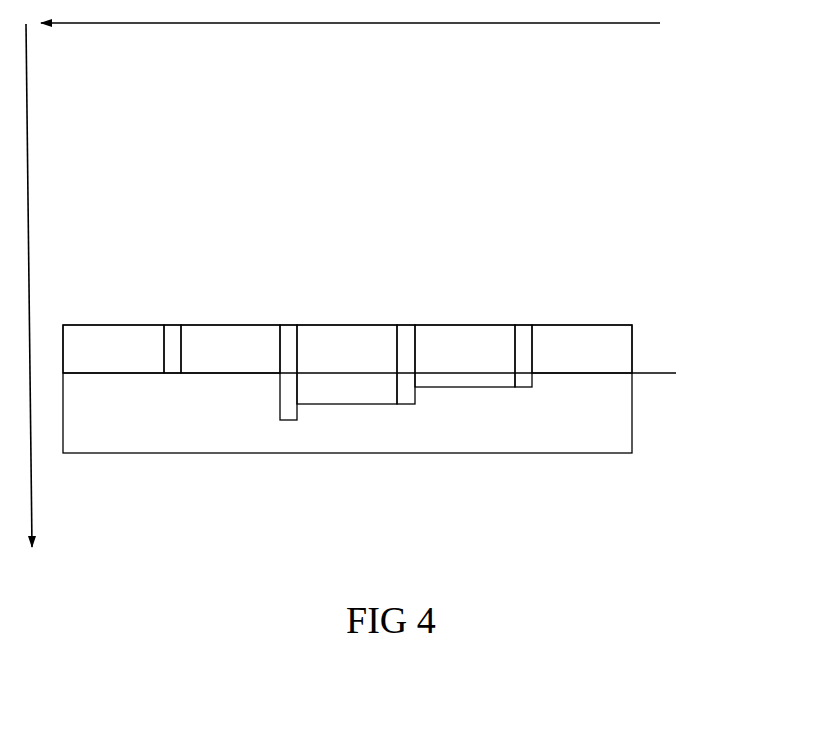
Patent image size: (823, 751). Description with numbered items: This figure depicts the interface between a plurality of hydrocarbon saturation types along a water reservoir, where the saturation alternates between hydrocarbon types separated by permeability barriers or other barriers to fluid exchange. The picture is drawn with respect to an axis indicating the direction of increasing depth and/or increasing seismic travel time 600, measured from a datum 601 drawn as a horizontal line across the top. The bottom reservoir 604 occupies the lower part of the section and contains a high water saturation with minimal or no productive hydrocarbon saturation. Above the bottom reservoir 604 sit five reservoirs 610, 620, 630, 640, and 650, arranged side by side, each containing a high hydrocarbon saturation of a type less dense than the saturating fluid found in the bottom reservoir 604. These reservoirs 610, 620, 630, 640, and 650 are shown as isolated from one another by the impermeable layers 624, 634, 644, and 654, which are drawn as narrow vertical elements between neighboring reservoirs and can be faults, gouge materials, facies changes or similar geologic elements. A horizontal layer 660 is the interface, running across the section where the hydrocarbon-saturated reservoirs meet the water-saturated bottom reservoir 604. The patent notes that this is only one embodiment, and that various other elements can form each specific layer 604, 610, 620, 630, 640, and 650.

The axis indicating the direction of increasing depth and/or increasing seismic trav 600 is at (32, 513).
The datum 601 is at (587, 23).
The bottom reservoir 604 is at (578, 418).
The reservoir 610 is at (106, 352).
The reservoir 620 is at (232, 352).
The impermeable layer 624 is at (175, 325).
The reservoir 630 is at (352, 345).
The impermeable layer 634 is at (291, 325).
The reservoir 640 is at (465, 352).
The impermeable layer 644 is at (408, 325).
The reservoir 650 is at (588, 352).
The impermeable layer 654 is at (521, 325).
The interface 660 is at (392, 373).